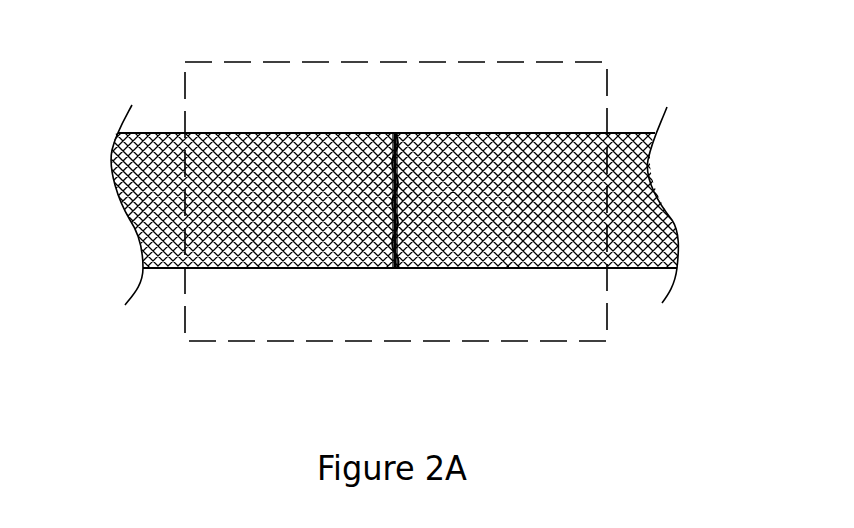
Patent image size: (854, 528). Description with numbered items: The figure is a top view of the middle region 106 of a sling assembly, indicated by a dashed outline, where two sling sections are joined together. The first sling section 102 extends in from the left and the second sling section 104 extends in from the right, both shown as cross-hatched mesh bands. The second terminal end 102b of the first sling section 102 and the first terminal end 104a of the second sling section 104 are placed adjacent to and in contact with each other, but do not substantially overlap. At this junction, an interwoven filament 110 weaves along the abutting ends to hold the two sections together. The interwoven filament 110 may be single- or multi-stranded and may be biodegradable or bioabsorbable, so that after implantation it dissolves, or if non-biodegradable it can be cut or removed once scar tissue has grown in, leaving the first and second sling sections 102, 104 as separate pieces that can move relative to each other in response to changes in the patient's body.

The first sling section 102 is at (160, 133).
The second sling section 104 is at (625, 133).
The second terminal end of the first sling section 102b is at (368, 133).
The first terminal end of the second sling section 104a is at (433, 133).
The interwoven filament 110 is at (398, 268).
The middle region 106 is at (607, 341).